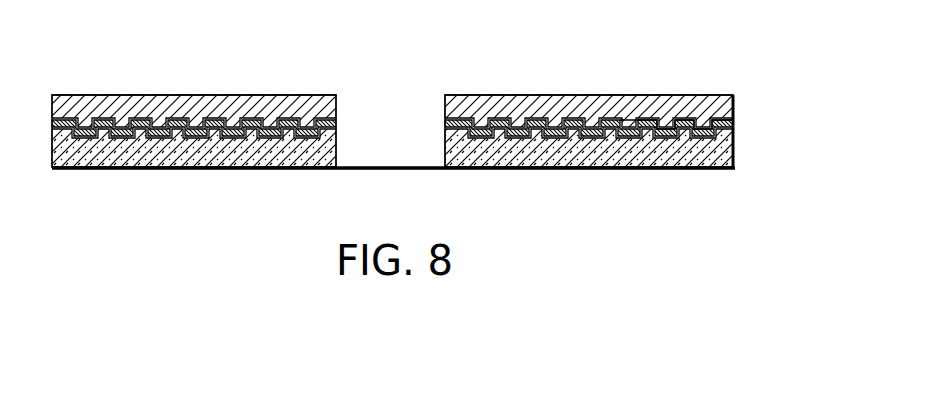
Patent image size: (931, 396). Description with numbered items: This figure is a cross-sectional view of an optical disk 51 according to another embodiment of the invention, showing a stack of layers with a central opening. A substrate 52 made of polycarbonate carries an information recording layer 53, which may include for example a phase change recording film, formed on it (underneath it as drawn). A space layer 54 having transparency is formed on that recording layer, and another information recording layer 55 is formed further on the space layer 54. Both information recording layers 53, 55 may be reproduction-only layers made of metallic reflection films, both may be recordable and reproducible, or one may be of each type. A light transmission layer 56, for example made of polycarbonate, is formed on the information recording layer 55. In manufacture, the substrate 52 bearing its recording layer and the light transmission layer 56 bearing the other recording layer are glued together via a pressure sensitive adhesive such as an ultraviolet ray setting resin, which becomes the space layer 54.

The optical disk 51 is at (498, 95).
The substrate 52 is at (697, 95).
The information recording layer 53 is at (735, 122).
The space layer 54 is at (735, 131).
The information recording layer 55 is at (735, 150).
The light transmission layer 56 is at (688, 168).